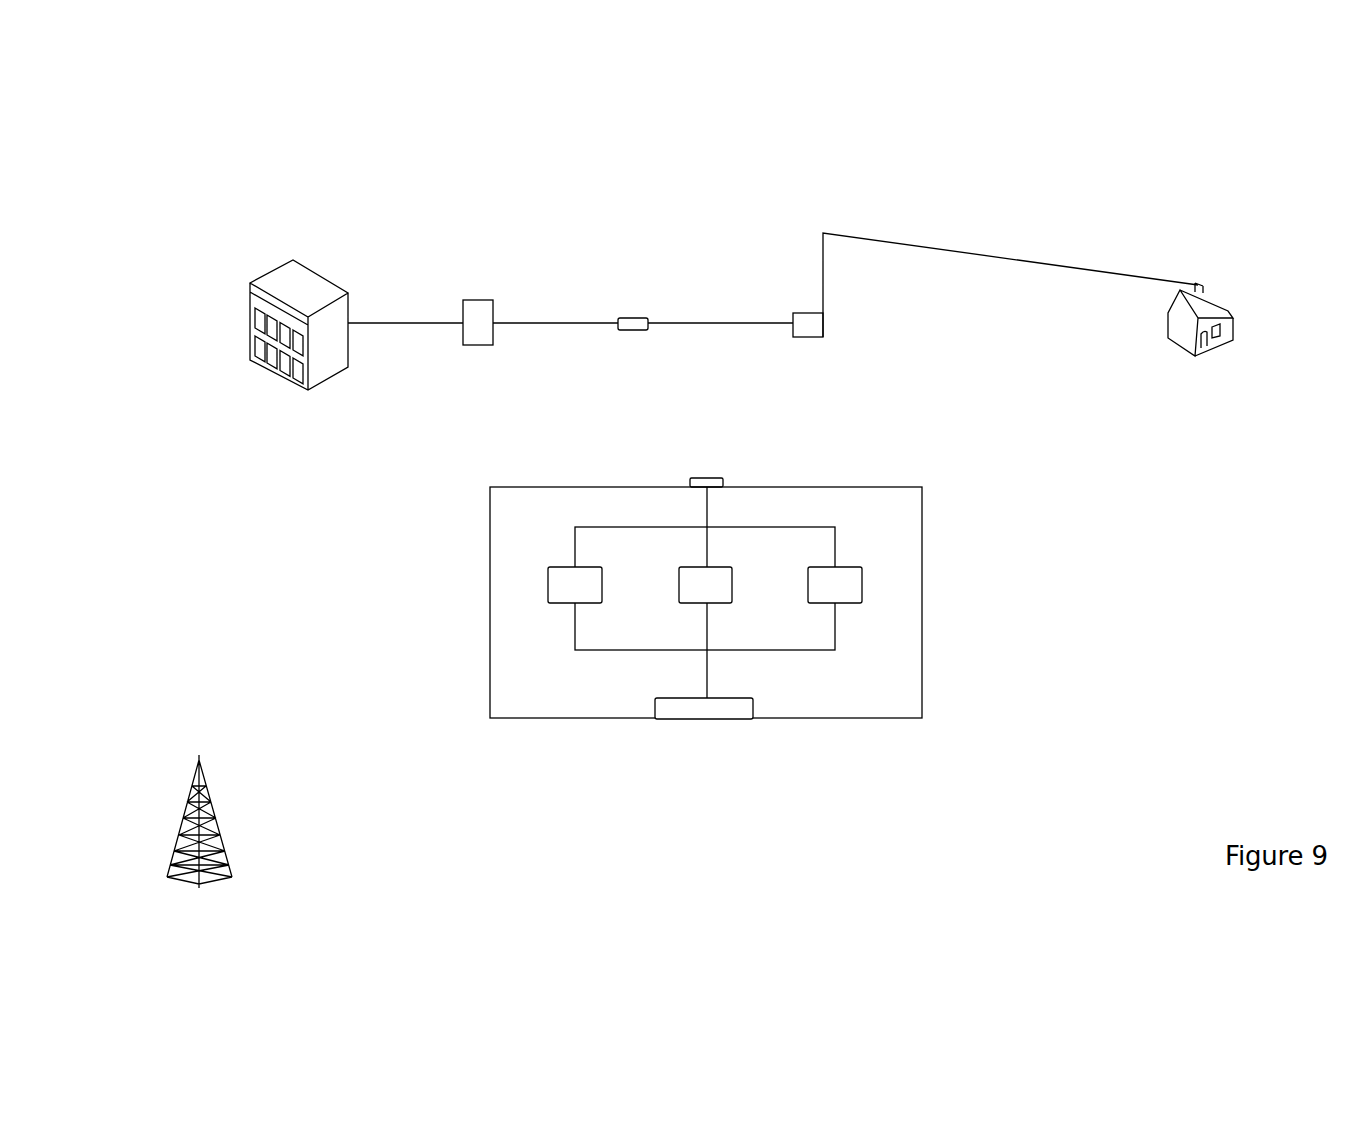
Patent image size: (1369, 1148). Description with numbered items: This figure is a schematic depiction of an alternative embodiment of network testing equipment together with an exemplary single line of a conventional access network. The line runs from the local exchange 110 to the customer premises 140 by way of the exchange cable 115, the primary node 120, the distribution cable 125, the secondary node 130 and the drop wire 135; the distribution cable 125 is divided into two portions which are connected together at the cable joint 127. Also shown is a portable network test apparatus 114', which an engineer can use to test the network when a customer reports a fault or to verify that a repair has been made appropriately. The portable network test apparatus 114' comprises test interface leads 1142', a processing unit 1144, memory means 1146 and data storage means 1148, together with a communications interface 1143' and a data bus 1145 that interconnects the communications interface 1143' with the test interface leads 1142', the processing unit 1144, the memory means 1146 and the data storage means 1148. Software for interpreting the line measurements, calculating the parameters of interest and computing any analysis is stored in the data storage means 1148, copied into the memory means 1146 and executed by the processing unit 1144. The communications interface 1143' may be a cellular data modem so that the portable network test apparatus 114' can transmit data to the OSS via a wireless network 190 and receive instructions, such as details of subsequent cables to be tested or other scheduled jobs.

The local exchange 110 is at (247, 325).
The exchange cable 115 is at (425, 321).
The primary node 120 is at (478, 298).
The distribution cable 125 is at (577, 311).
The cable joint 127 is at (632, 332).
The secondary node 130 is at (814, 339).
The drop wire 135 is at (940, 245).
The customer premises 140 is at (1198, 356).
The wireless network 190 is at (233, 815).
The portable network test apparatus 114' is at (789, 610).
The test interface leads 1142' is at (789, 458).
The communications interface 1143' is at (778, 773).
The processing unit 1144 is at (546, 585).
The data bus 1145 is at (836, 653).
The memory means 1146 is at (678, 589).
The data storage means 1148 is at (864, 580).